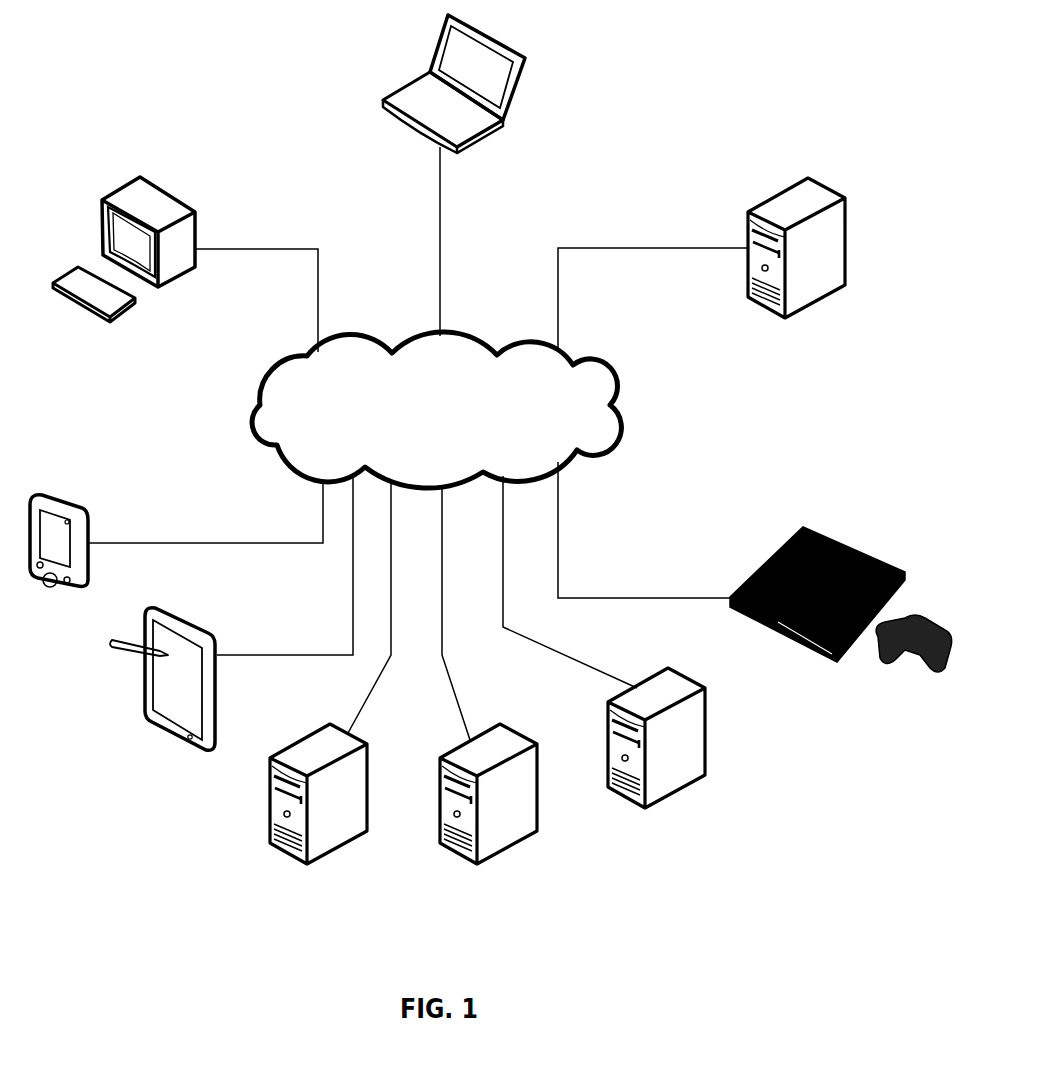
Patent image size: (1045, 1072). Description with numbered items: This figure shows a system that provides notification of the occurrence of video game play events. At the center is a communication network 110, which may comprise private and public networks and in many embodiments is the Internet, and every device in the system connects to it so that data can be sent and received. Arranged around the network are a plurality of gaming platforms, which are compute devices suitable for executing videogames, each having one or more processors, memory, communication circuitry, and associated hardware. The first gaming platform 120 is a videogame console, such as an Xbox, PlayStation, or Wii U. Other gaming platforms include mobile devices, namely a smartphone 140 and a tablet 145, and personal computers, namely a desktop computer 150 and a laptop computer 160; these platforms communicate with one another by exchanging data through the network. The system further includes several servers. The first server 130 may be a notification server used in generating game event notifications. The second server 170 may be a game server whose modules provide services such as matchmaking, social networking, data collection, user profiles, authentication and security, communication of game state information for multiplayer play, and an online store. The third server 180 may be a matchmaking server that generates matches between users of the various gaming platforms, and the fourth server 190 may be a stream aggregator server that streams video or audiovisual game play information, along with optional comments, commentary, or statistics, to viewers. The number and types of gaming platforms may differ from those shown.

The communication network 110 is at (250, 411).
The first gaming platform 120 is at (837, 660).
The first server 130 is at (820, 302).
The smartphone 140 is at (62, 595).
The tablet 145 is at (175, 740).
The desktop computer 150 is at (112, 319).
The laptop computer 160 is at (492, 133).
The second server 170 is at (337, 853).
The third server 180 is at (502, 855).
The fourth server 190 is at (677, 795).